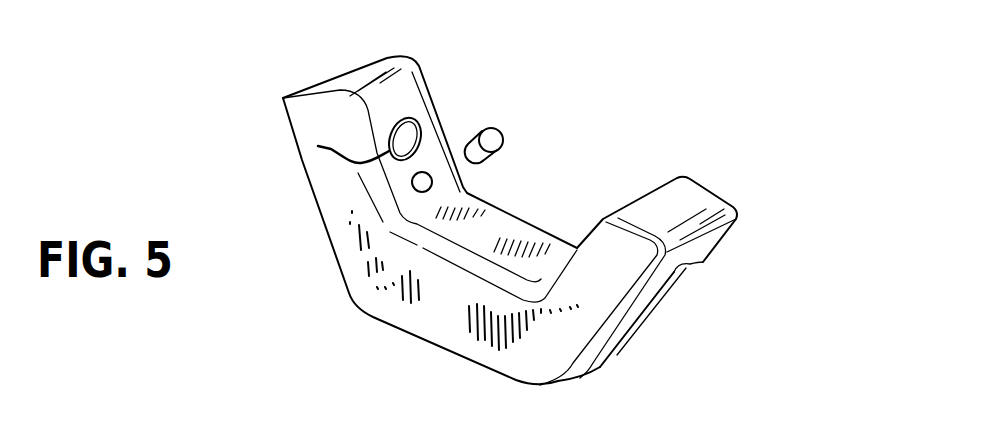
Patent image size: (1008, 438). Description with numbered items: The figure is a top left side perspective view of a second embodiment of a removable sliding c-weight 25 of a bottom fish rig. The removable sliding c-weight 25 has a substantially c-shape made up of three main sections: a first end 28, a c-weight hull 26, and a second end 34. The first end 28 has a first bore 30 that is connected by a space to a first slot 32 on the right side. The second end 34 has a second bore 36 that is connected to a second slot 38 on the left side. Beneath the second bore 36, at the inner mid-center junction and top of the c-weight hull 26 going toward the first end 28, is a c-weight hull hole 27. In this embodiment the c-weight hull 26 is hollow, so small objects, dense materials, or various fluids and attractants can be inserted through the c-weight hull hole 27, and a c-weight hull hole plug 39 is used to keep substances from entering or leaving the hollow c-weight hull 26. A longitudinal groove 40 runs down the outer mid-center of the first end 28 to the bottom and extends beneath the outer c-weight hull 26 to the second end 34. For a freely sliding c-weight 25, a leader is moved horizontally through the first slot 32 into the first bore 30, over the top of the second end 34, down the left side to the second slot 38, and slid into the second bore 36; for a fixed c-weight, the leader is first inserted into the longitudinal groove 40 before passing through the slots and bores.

The removable sliding c-weight 25 is at (688, 102).
The c-weight hull 26 is at (362, 302).
The c-weight hull hole 27 is at (424, 182).
The first end 28 is at (731, 229).
The first bore 30 is at (687, 280).
The first slot 32 is at (700, 265).
The second end 34 is at (332, 66).
The second bore 36 is at (421, 126).
The second slot 38 is at (318, 150).
The c-weight hull hole plug 39 is at (506, 131).
The longitudinal groove 40 is at (643, 338).